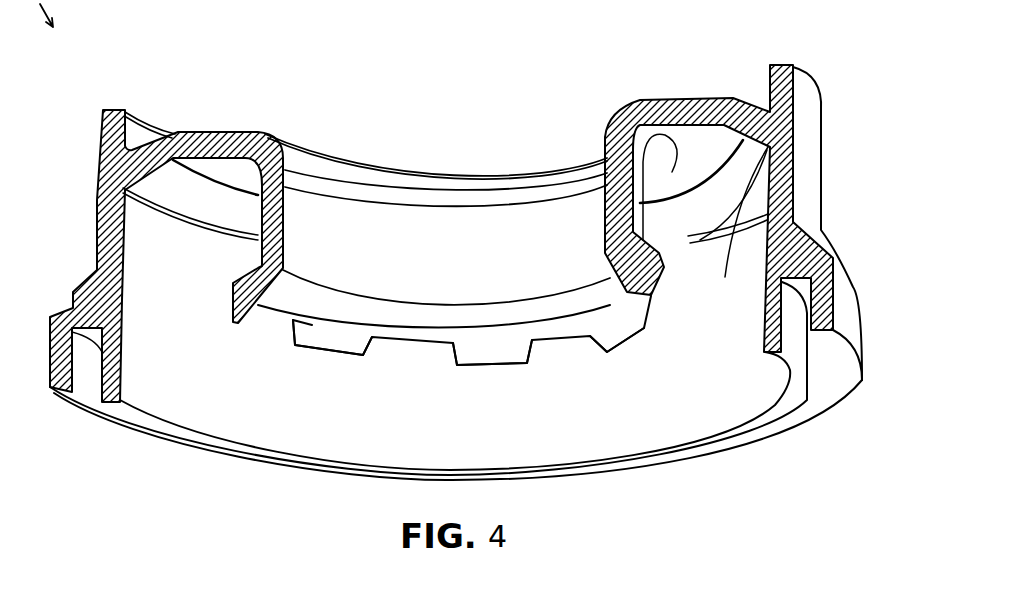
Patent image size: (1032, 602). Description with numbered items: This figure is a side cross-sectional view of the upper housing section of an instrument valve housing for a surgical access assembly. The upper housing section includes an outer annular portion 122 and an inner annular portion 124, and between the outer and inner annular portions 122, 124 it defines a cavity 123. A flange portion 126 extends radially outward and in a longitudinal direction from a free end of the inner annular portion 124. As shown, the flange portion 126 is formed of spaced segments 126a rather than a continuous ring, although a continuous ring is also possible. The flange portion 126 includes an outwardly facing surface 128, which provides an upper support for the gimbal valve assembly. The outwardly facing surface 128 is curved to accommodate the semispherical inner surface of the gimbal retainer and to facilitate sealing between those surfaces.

The outer annular portion 122 is at (806, 211).
The cavity 123 is at (768, 152).
The inner annular portion 124 is at (614, 198).
The flange portion 126 is at (658, 344).
The spaced segments 126a is at (607, 333).
The outwardly facing surface 128 is at (335, 355).